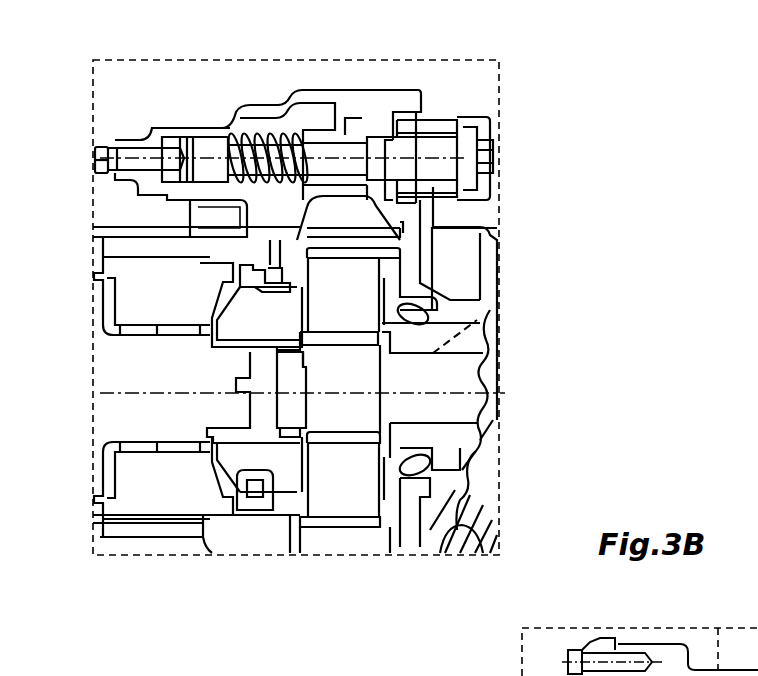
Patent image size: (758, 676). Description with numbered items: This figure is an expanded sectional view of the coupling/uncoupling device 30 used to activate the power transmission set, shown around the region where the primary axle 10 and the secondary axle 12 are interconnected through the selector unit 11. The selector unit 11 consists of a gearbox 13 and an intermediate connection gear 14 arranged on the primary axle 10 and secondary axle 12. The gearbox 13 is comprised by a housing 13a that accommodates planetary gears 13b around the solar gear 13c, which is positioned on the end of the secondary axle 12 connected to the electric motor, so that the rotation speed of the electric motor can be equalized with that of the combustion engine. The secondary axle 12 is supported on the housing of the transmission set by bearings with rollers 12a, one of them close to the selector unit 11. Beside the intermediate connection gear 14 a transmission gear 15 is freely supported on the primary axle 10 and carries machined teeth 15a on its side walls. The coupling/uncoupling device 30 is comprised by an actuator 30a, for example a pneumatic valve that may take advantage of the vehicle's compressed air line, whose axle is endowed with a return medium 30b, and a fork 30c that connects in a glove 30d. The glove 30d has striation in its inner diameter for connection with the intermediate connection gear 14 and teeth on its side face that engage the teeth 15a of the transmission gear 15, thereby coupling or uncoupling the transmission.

The coupling/uncoupling device 30 is at (406, 171).
The actuator 30a is at (342, 157).
The return medium 30b is at (253, 140).
The fork 30c is at (307, 215).
The glove 30d is at (250, 270).
The transmission gear 15 is at (125, 282).
The teeth 15a is at (233, 270).
The primary axle 10 is at (102, 403).
The secondary axle 12 is at (290, 392).
The bearings with rollers 12a is at (367, 318).
The gearbox 13 is at (496, 432).
The housing 13a is at (378, 525).
The planetary gears 13b is at (413, 322).
The solar gear 13c is at (353, 412).
The intermediate connection gear 14 is at (270, 460).
The selector unit 11 is at (300, 547).